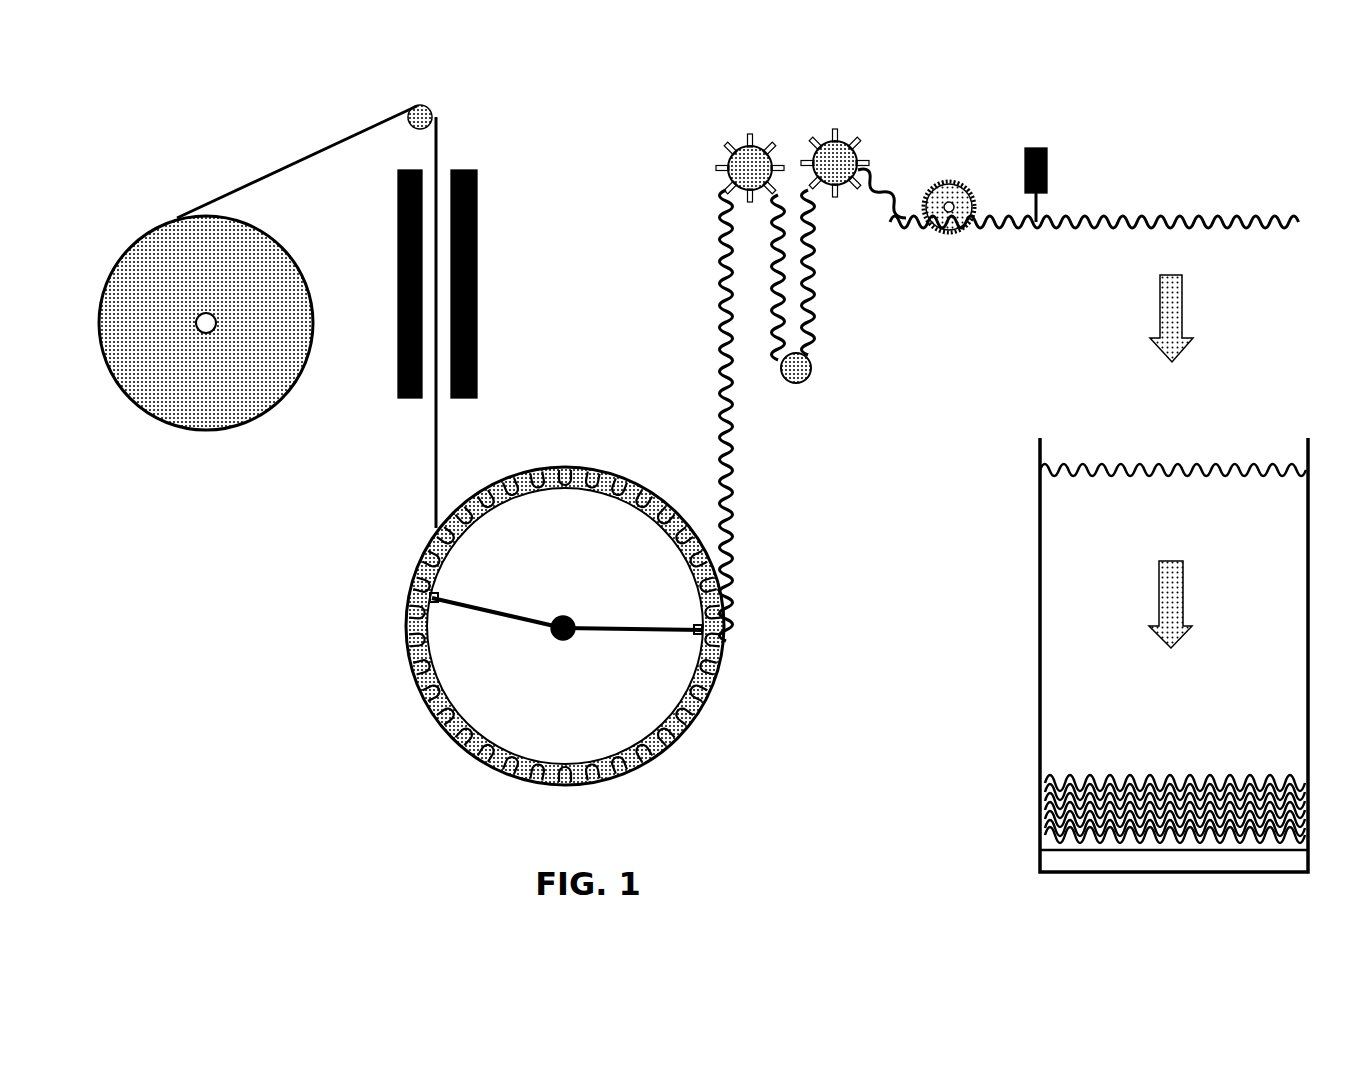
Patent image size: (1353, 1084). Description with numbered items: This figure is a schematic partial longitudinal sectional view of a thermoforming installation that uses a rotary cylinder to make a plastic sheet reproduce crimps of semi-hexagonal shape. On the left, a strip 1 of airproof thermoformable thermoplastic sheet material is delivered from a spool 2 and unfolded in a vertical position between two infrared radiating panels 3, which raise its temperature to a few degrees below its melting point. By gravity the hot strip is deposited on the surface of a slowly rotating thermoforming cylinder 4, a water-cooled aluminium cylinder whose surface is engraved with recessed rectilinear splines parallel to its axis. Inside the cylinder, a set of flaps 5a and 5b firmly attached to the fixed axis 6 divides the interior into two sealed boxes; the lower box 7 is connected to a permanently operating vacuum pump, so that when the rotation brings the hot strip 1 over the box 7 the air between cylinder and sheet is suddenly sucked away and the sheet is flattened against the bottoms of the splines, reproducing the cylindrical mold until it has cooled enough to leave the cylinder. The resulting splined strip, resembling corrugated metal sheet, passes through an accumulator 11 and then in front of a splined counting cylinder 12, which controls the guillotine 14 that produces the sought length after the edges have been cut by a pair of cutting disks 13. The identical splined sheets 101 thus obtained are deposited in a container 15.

The strip 1 is at (267, 172).
The spool 2 is at (186, 413).
The infrared radiating panels 3 is at (458, 391).
The thermoforming cylinder 4 is at (422, 697).
The flap 5a is at (478, 607).
The flap 5b is at (648, 618).
The fixed axis 6 is at (575, 635).
The lower box 7 is at (565, 626).
The accumulator 11 is at (814, 385).
The splined counting cylinder 12 is at (862, 160).
The cutting disks 13 is at (953, 236).
The guillotine 14 is at (1052, 168).
The container 15 is at (1036, 657).
The splined sheets 101 is at (1216, 214).